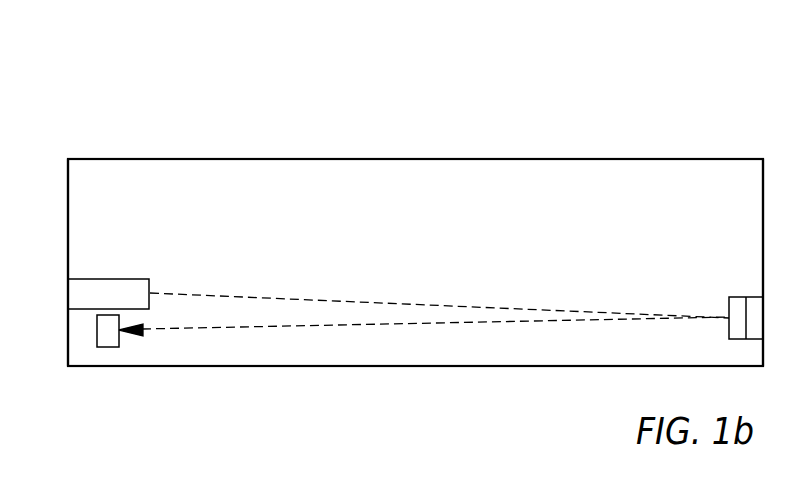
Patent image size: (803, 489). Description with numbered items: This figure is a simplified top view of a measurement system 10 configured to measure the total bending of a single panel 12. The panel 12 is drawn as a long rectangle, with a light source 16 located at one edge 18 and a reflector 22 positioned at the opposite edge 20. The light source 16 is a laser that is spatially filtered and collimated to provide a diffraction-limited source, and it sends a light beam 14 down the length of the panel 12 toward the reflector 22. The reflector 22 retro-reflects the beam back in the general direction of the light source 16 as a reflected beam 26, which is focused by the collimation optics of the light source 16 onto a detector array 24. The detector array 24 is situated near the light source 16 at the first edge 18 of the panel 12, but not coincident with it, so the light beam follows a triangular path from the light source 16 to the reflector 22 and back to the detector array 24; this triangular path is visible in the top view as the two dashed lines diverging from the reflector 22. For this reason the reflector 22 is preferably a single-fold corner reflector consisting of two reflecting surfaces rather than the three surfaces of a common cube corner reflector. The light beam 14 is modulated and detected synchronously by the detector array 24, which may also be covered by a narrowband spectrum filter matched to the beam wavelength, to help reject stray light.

The measurement system 10 is at (706, 89).
The panel 12 is at (545, 195).
The light beam 14 is at (375, 302).
The light source 16 is at (78, 292).
The first edge 18 is at (68, 190).
The opposite edge 20 is at (763, 193).
The reflector 22 is at (757, 309).
The detector array 24 is at (107, 326).
The reflected beam 26 is at (343, 325).